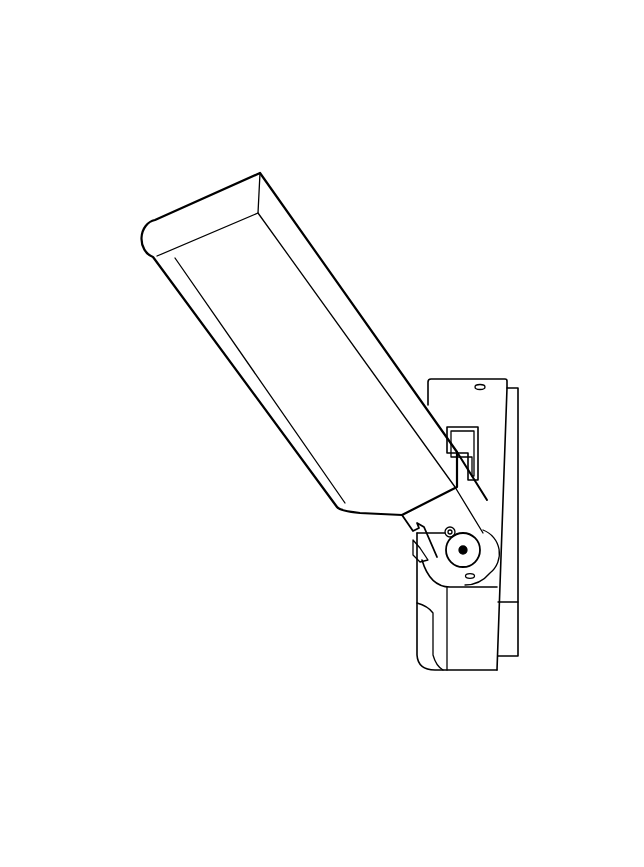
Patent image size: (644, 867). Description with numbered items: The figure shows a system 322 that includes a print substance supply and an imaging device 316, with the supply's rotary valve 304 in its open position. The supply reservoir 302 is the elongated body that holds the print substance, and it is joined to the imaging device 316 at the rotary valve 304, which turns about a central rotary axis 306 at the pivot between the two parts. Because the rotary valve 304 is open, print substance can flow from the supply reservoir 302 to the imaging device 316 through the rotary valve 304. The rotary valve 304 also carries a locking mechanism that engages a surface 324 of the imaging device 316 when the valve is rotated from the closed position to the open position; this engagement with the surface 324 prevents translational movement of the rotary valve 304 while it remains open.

The system 322 is at (155, 125).
The supply reservoir 302 is at (290, 279).
The imaging device 316 is at (460, 377).
The rotary valve 304 is at (482, 507).
The central rotary axis 306 is at (465, 549).
The surface of imaging device 324 is at (413, 537).